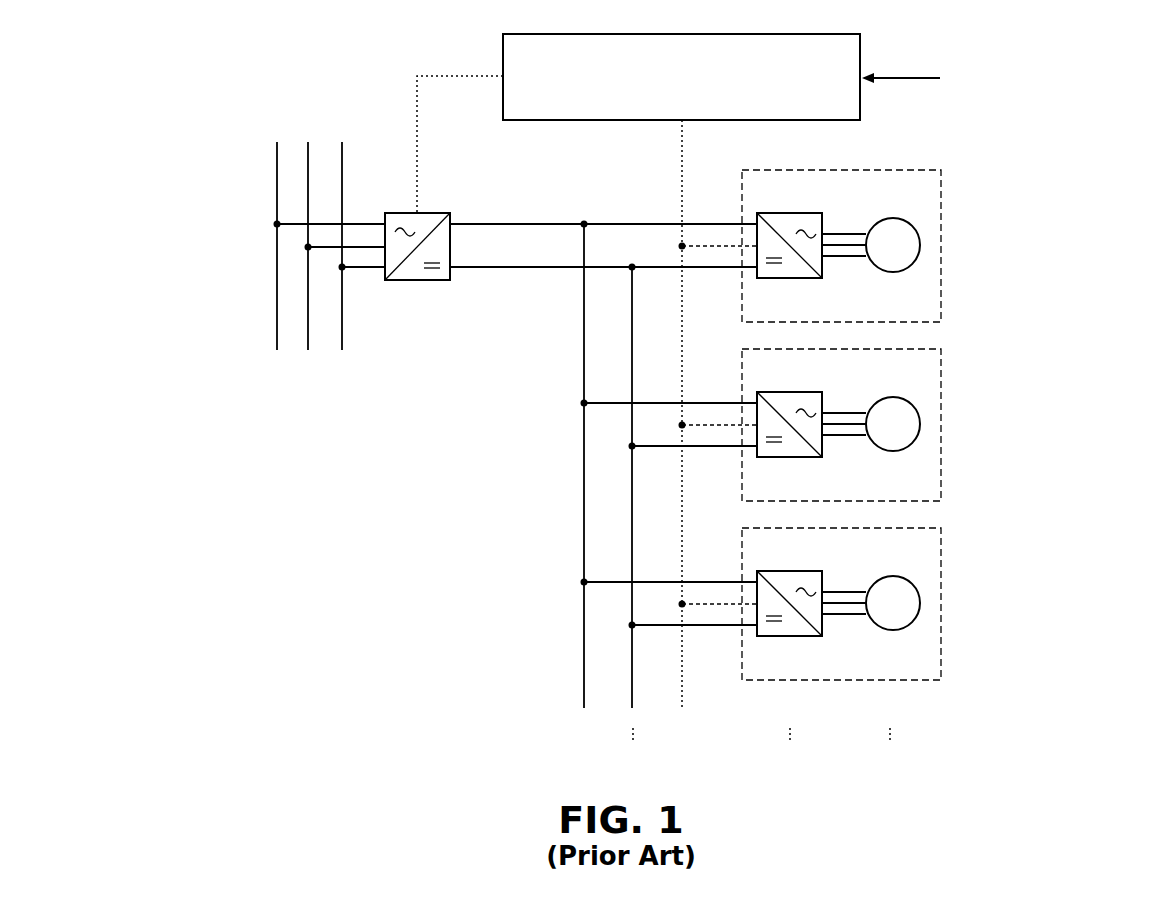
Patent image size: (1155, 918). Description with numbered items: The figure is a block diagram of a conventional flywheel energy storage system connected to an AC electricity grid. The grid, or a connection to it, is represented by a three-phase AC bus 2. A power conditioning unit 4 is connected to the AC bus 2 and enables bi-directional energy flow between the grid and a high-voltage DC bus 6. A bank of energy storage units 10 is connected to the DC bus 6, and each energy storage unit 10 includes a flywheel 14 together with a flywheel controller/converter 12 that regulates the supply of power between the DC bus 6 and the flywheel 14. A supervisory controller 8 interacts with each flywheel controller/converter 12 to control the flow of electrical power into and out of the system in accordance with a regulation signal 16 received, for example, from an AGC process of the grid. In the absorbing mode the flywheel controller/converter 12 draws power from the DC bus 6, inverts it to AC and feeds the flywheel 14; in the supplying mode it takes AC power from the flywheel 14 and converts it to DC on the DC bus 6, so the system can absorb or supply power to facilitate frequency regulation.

The 3-phase AC bus 2 is at (236, 200).
The power conditioning unit 4 is at (393, 212).
The high-voltage DC bus 6 is at (550, 420).
The supervisory controller 8 is at (689, 103).
The energy storage unit 10 is at (944, 247).
The flywheel controller/converter 12 is at (789, 213).
The flywheel 14 is at (891, 218).
The regulation signal 16 is at (900, 78).